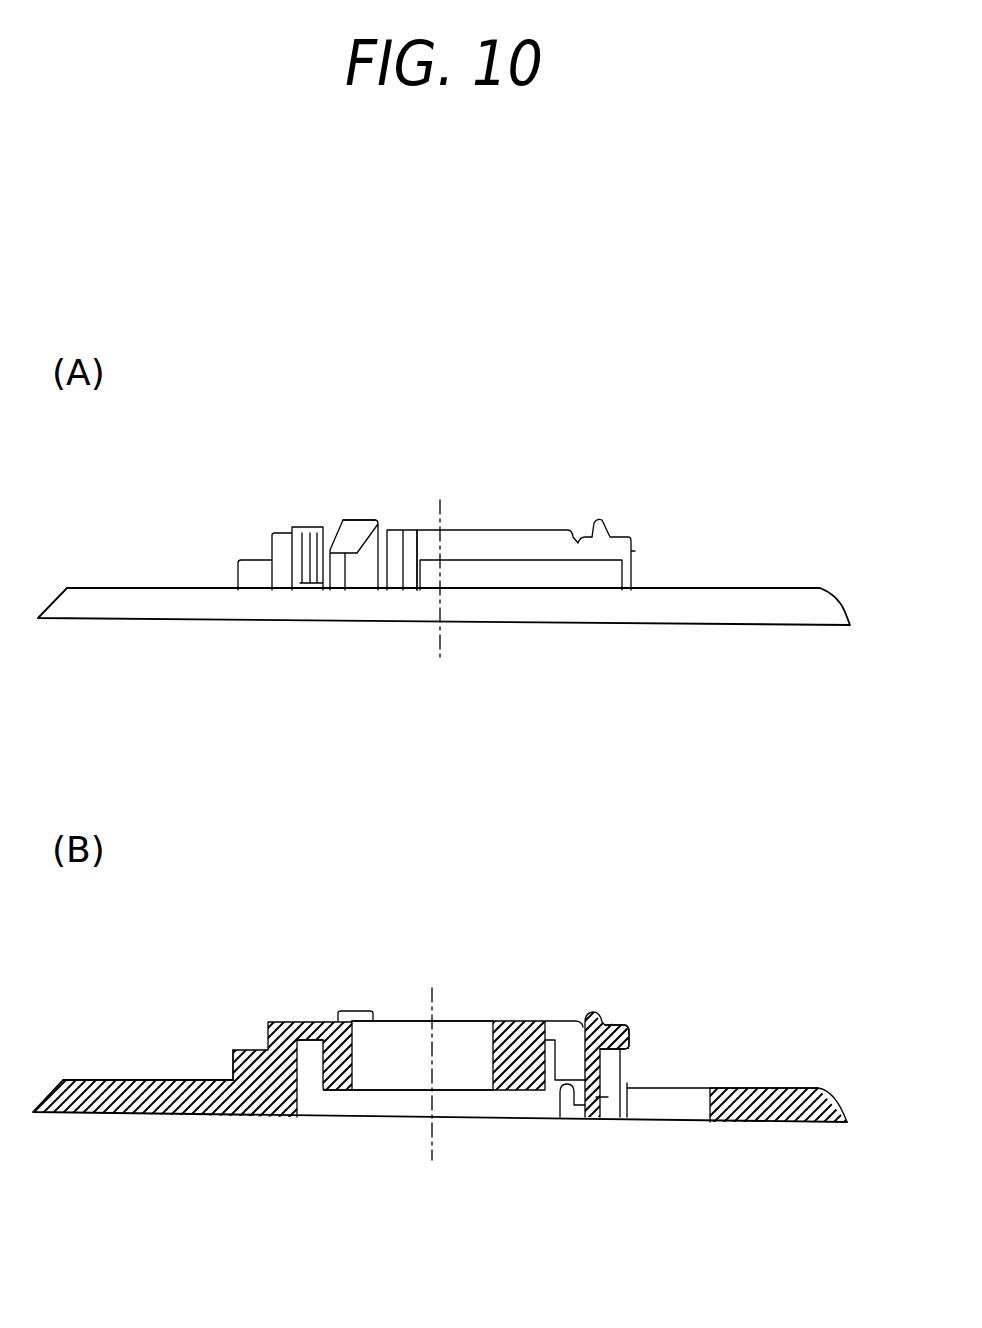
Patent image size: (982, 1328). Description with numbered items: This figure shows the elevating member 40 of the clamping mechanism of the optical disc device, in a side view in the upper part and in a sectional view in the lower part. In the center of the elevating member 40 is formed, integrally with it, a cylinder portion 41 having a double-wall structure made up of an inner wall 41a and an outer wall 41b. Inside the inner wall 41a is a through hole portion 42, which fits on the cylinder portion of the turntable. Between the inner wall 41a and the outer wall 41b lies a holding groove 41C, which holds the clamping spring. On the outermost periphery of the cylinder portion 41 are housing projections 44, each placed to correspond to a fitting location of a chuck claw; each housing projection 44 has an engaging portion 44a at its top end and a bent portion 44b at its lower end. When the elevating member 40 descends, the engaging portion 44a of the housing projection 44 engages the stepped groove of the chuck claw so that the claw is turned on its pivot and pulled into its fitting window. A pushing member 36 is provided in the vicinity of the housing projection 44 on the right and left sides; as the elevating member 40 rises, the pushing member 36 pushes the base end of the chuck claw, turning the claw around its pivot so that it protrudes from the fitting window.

The pushing member 36 is at (388, 593).
The elevating member 40 is at (566, 511).
The cylinder portion 41 is at (493, 528).
The inner wall 41a is at (338, 1100).
The outer wall 41b is at (245, 1117).
The holding groove 41C is at (305, 1045).
The through hole portion 42 is at (467, 1027).
The housing projection 44 is at (374, 506).
The engaging portion 44a is at (343, 527).
The bent portion 44b is at (560, 1110).